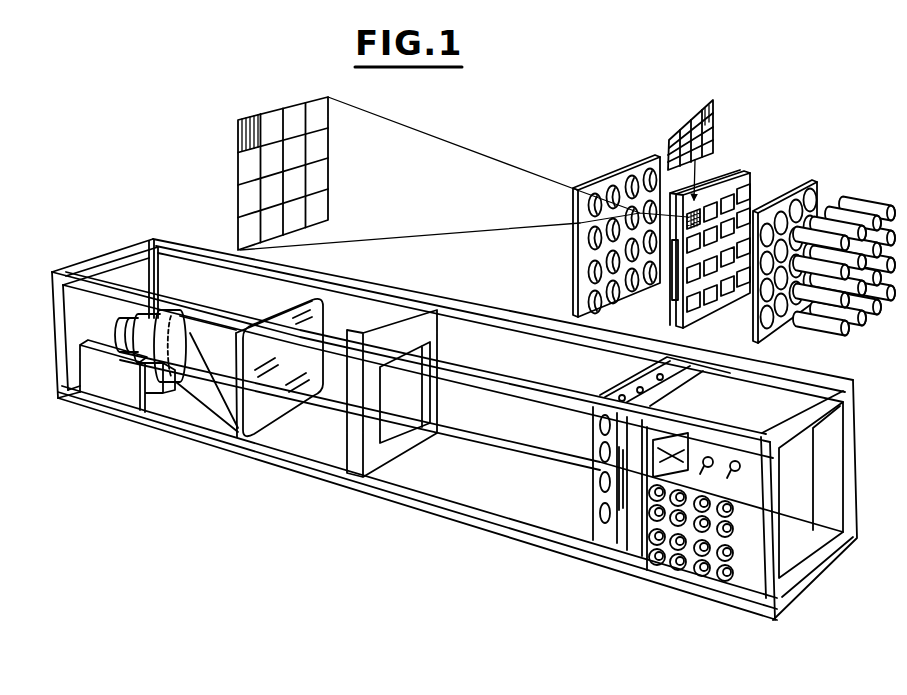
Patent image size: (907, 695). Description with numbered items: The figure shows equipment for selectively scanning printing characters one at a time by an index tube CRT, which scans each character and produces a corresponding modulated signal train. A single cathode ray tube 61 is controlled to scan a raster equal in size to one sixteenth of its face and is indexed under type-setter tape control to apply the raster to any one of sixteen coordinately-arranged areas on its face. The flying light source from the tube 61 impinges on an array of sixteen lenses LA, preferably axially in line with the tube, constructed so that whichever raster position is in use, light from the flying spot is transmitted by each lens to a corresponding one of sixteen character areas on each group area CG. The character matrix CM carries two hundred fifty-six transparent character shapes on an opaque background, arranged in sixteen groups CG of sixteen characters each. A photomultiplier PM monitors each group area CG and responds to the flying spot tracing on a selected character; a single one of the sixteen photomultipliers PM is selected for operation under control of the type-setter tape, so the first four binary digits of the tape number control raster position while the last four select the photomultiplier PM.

The index CRT tube CRT is at (201, 391).
The cathode ray tube 61 is at (242, 437).
The lens array LA is at (620, 378).
The character group CG is at (667, 374).
The character matrix CM is at (706, 366).
The photomultiplier PM is at (757, 390).